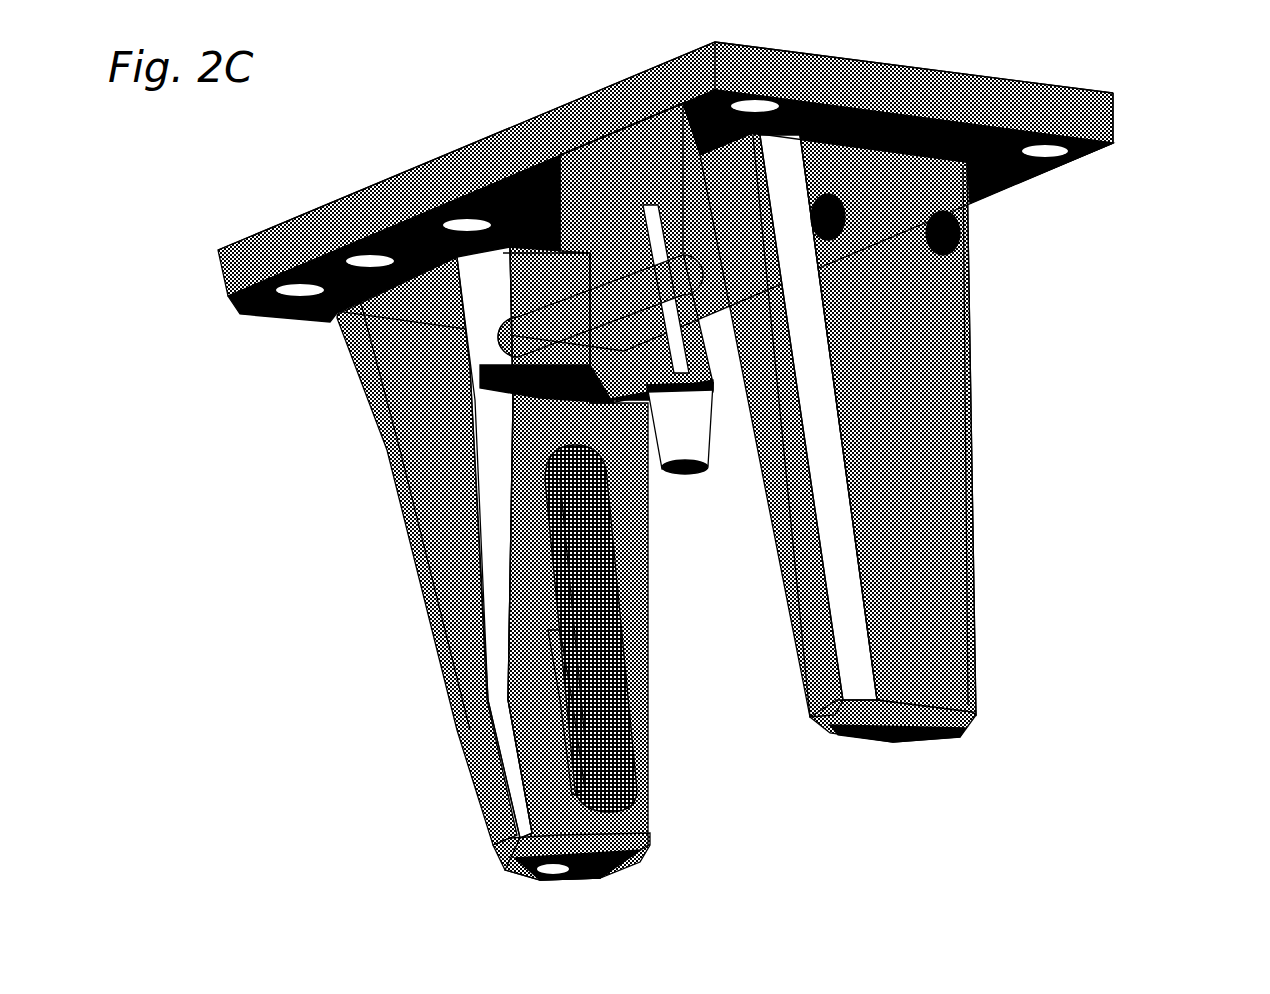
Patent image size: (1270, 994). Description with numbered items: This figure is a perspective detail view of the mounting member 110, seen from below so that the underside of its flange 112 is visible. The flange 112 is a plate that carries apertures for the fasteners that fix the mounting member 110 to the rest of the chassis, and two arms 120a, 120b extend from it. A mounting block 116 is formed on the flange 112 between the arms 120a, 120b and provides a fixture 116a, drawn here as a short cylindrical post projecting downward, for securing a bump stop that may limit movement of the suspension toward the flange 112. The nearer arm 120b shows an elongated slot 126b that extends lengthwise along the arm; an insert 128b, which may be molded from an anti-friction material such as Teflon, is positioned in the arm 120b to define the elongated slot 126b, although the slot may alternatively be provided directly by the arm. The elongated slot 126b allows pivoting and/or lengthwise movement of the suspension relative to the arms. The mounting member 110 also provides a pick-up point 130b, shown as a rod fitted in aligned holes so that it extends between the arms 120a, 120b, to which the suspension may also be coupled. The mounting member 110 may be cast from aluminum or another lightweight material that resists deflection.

The mounting member 110 is at (732, 461).
The flange 112 is at (1121, 121).
The mounting block 116 is at (652, 362).
The fixture 116a is at (696, 464).
The arm 120a is at (982, 500).
The arm 120b is at (518, 563).
The elongated slot 126b is at (610, 710).
The insert 128b is at (516, 694).
The pick-up point 130b is at (560, 307).